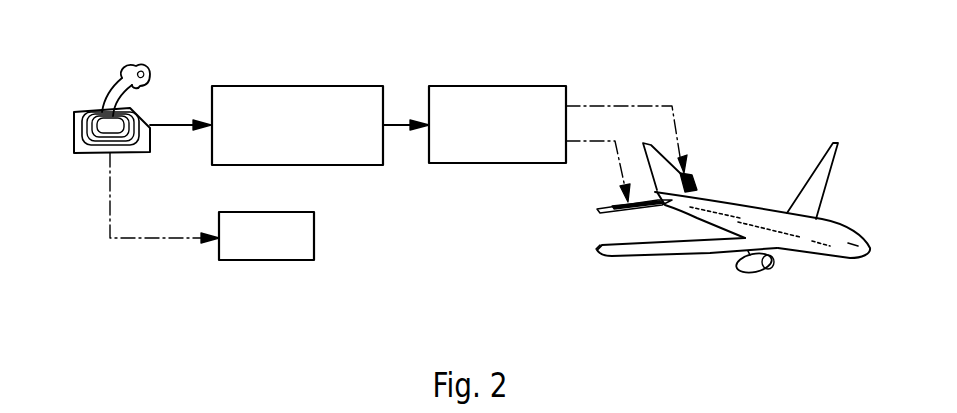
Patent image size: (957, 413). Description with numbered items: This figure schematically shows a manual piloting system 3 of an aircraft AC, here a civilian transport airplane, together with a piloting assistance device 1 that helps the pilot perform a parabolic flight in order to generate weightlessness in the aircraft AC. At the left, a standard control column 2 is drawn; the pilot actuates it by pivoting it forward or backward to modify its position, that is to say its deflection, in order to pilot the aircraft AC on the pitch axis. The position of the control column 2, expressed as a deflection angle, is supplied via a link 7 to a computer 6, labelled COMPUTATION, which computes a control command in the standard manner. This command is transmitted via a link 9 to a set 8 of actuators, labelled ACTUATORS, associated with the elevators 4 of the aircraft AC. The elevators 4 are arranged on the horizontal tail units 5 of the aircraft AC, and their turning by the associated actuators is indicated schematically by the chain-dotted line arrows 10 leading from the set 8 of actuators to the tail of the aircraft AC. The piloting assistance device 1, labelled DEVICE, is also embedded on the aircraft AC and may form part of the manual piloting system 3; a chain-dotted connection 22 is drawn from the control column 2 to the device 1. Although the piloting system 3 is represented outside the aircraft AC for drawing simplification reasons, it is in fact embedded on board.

The piloting assistance device 1 is at (315, 240).
The control column 2 is at (105, 103).
The manual piloting system 3 is at (178, 260).
The elevators 4 is at (699, 160).
The horizontal tail units 5 is at (697, 184).
The computer 6 is at (277, 167).
The link 7 is at (172, 130).
The set of actuators 8 is at (490, 164).
The link 9 is at (401, 130).
The chain-dotted line arrows 10 is at (648, 105).
The link control stick to device 22 is at (108, 222).
The aircraft AC is at (800, 251).